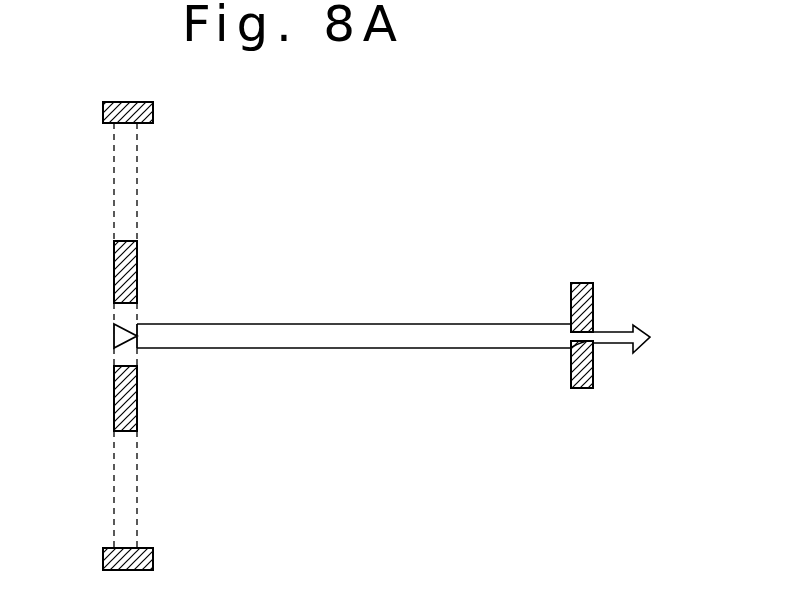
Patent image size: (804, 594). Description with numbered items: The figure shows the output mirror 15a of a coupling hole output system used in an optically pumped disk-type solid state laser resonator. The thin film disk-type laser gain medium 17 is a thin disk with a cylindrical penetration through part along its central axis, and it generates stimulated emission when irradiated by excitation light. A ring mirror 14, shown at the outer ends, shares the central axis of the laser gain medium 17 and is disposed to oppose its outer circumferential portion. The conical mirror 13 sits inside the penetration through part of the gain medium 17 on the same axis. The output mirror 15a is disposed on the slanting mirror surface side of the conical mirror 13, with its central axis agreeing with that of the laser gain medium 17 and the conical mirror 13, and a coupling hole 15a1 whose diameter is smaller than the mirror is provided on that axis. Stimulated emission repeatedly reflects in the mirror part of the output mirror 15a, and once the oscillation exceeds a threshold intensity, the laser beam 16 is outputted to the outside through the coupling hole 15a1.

The conical mirror 13 is at (114, 336).
The ring mirror 14 is at (153, 113).
The output mirror 15a is at (584, 283).
The coupling hole 15a1 is at (594, 366).
The laser beam 16 is at (611, 327).
The thin film disk-type laser gain medium 17 is at (114, 268).